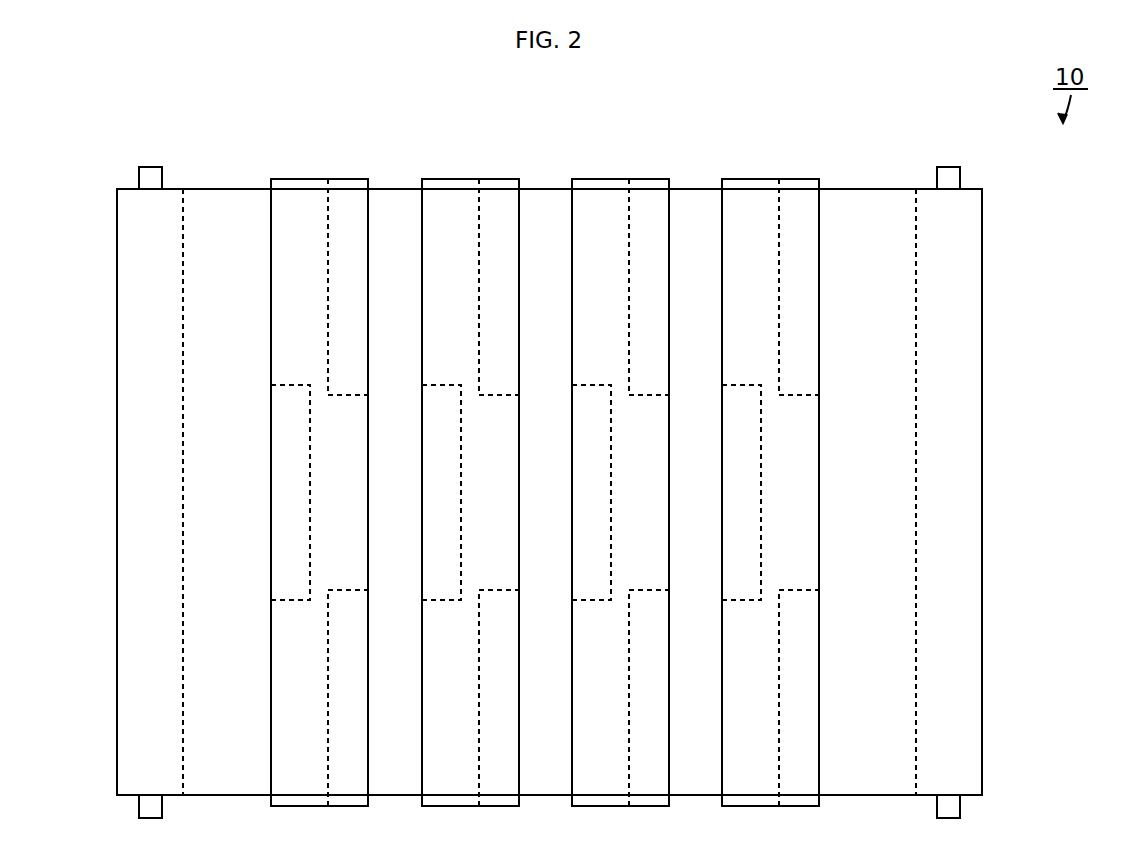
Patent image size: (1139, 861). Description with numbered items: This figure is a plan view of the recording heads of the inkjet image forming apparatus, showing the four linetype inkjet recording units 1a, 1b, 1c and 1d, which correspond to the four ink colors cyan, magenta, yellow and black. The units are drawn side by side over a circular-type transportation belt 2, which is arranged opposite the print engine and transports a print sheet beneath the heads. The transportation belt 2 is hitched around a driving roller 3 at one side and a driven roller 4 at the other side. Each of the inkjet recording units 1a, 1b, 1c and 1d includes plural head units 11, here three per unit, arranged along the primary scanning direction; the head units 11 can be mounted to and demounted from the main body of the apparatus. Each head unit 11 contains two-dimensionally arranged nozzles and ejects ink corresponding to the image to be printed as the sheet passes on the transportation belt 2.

The transportation belt 2 is at (874, 205).
The driving roller 3 is at (139, 183).
The driven roller 4 is at (959, 182).
The inkjet recording unit 1a is at (736, 179).
The inkjet recording unit 1b is at (586, 179).
The inkjet recording unit 1c is at (435, 179).
The inkjet recording unit 1d is at (284, 179).
The head unit 11 is at (358, 212).